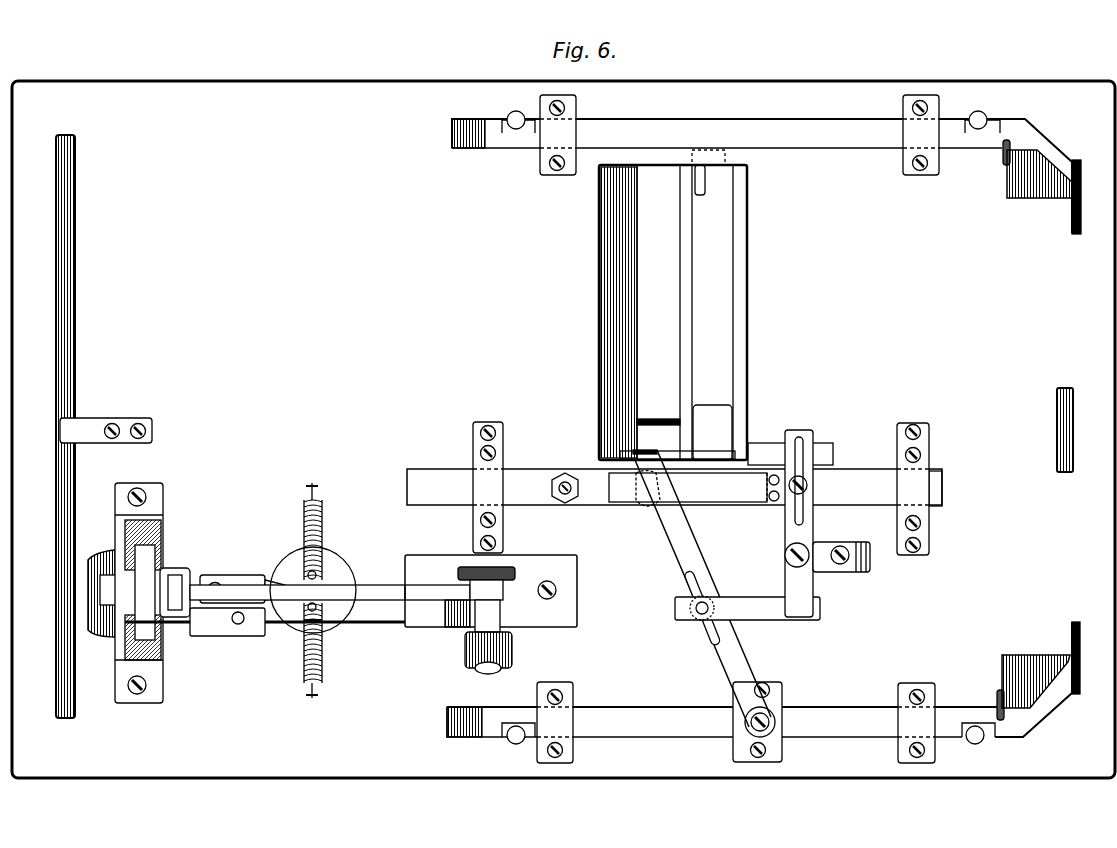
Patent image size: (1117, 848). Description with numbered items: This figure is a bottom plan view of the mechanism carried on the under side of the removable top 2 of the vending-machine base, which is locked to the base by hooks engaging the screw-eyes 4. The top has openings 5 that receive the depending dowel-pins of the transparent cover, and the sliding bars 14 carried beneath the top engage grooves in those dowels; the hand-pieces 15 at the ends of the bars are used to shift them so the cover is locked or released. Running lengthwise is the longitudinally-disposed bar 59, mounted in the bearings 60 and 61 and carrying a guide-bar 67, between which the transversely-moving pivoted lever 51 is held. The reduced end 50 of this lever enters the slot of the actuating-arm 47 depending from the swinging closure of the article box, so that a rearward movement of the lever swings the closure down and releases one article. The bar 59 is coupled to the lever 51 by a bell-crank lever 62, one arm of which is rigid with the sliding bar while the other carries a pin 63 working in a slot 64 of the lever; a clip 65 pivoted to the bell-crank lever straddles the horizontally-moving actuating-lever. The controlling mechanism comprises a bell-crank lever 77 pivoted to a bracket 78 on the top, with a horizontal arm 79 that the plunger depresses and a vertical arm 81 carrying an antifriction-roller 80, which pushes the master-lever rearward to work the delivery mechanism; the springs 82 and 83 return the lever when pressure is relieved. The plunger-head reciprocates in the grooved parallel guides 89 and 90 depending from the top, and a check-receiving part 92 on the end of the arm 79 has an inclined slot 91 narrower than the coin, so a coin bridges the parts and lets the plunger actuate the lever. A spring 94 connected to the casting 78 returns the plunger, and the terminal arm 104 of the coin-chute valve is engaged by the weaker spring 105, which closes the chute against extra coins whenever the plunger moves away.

The removable top 2 is at (747, 305).
The screw-eyes 4 is at (1002, 152).
The openings or perforations 5 is at (516, 116).
The sliding bars 14 is at (772, 133).
The hand-pieces 15 is at (1074, 212).
The actuating-arm 47 is at (672, 458).
The reduced end 50 is at (612, 457).
The pivoted lever 51 is at (681, 553).
The longitudinally-disposed bar 59 is at (604, 490).
The bearing 60 is at (487, 488).
The bearing 61 is at (925, 480).
The bell-crank lever 62 is at (790, 528).
The pin 63 is at (704, 613).
The slot 64 is at (690, 582).
The clip 65 is at (830, 566).
The guide-bar 67 is at (714, 485).
The bell-crank lever 77 is at (381, 585).
The bracket 78 is at (507, 578).
The horizontal arm 79 is at (286, 577).
The antifriction-roller 80 is at (485, 648).
The vertical arm 81 is at (512, 610).
The spring 82 is at (322, 523).
The spring 83 is at (322, 652).
The guide 89 is at (160, 545).
The guide 90 is at (168, 648).
The inclined slot 91 is at (180, 576).
The check-receiving part 92 is at (226, 578).
The spring 94 is at (300, 630).
The terminal arm 104 is at (207, 628).
The spring 105 is at (230, 640).